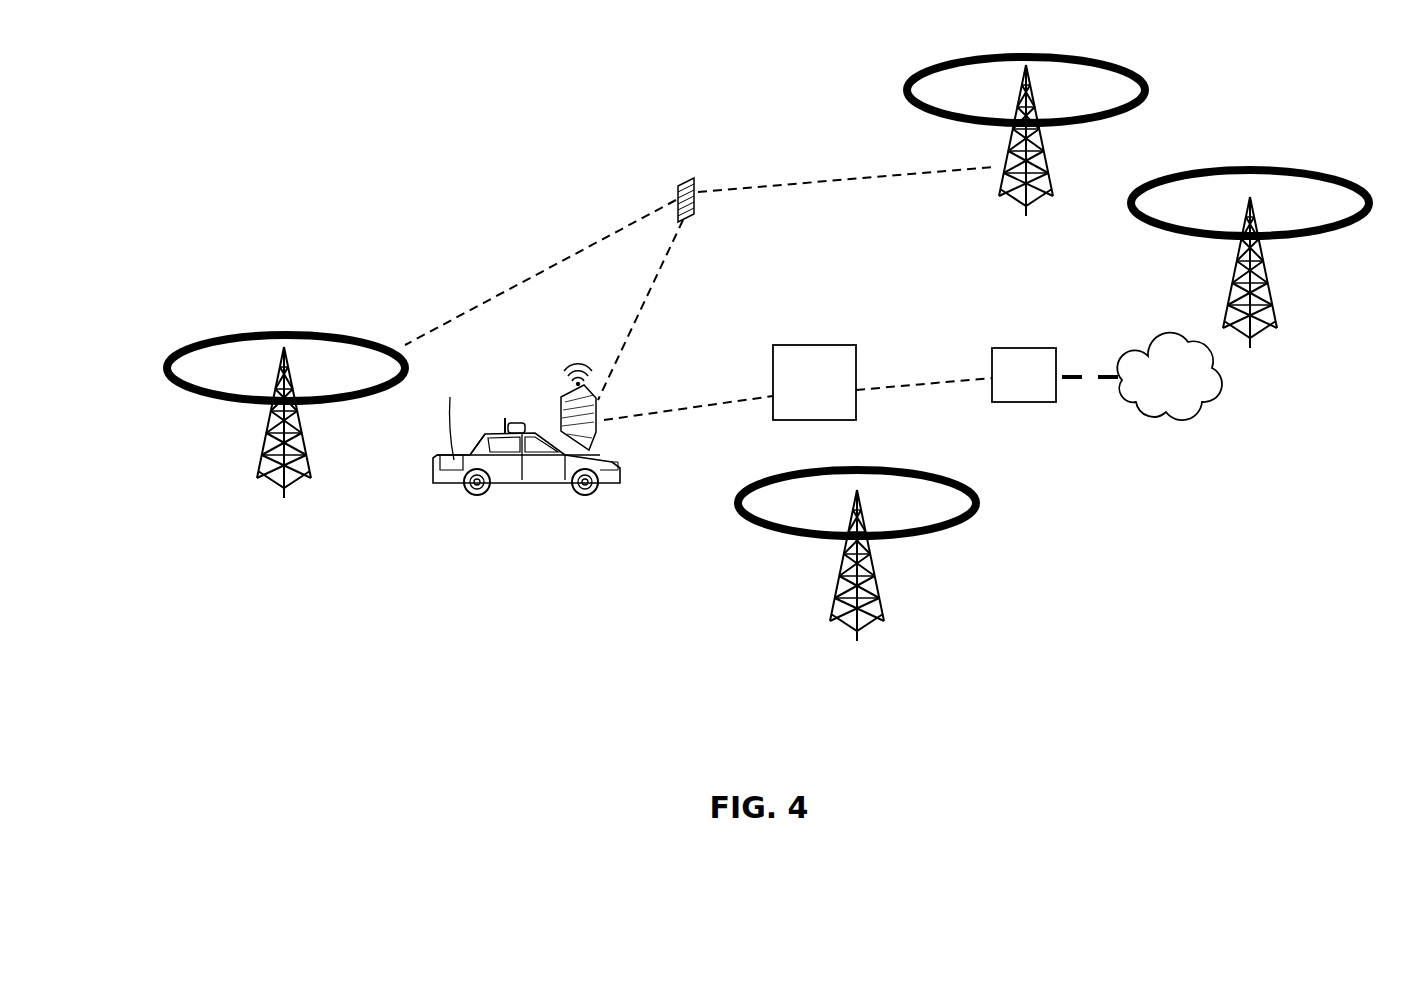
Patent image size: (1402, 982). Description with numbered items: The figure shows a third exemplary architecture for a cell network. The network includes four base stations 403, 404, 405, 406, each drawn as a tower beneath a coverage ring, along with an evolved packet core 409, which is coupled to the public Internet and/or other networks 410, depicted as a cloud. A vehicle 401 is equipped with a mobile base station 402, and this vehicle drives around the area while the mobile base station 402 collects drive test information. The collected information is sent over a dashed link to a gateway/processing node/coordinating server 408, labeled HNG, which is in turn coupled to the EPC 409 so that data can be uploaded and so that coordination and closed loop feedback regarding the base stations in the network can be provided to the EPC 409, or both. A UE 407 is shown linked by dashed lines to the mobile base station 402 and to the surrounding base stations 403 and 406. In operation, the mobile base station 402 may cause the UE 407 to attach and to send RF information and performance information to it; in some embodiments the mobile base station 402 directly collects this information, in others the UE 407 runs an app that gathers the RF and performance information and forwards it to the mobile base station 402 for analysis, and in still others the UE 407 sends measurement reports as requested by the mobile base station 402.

The vehicle 401 is at (500, 417).
The mobile base station 402 is at (562, 397).
The base station 403 is at (302, 415).
The base station 404 is at (872, 548).
The base station 405 is at (1272, 255).
The base station 406 is at (1045, 138).
The UE 407 is at (702, 207).
The gateway/processing node/coordinating server 408 is at (820, 342).
The evolved packet core 409 is at (1027, 342).
The public Internet and/or other networks 410 is at (1177, 415).